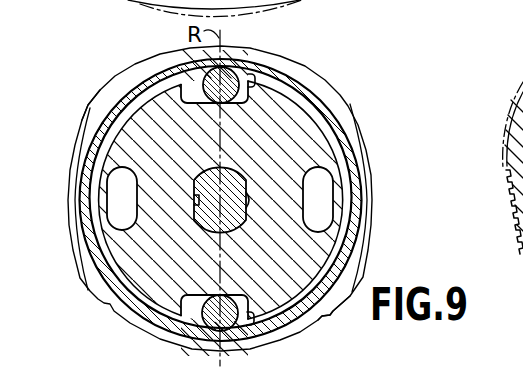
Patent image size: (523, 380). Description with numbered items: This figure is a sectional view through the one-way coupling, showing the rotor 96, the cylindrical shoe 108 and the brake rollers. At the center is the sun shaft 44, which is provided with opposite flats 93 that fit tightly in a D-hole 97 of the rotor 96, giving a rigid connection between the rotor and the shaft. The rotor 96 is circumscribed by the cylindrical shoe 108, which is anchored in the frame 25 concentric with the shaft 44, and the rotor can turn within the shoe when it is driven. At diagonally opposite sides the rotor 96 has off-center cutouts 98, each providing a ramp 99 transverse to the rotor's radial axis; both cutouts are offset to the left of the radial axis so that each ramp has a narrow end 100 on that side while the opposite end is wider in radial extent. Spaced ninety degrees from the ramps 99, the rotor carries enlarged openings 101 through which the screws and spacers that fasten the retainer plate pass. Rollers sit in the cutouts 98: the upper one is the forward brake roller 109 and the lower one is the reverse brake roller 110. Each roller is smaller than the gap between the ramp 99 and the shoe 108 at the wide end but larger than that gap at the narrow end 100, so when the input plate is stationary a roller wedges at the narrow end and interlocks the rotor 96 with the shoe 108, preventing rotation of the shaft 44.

The frame 25 is at (340, 108).
The sun shaft 44 is at (233, 183).
The flats 93 is at (249, 200).
The rotor 96 is at (341, 157).
The D-hole 97 is at (197, 200).
The off-center cutouts 98 is at (256, 78).
The ramp 99 is at (207, 108).
The narrow end 100 is at (146, 83).
The enlarged openings 101 is at (117, 200).
The cylindrical shoe 108 is at (93, 94).
The forward brake roller 109 is at (239, 80).
The reverse brake roller 110 is at (280, 328).